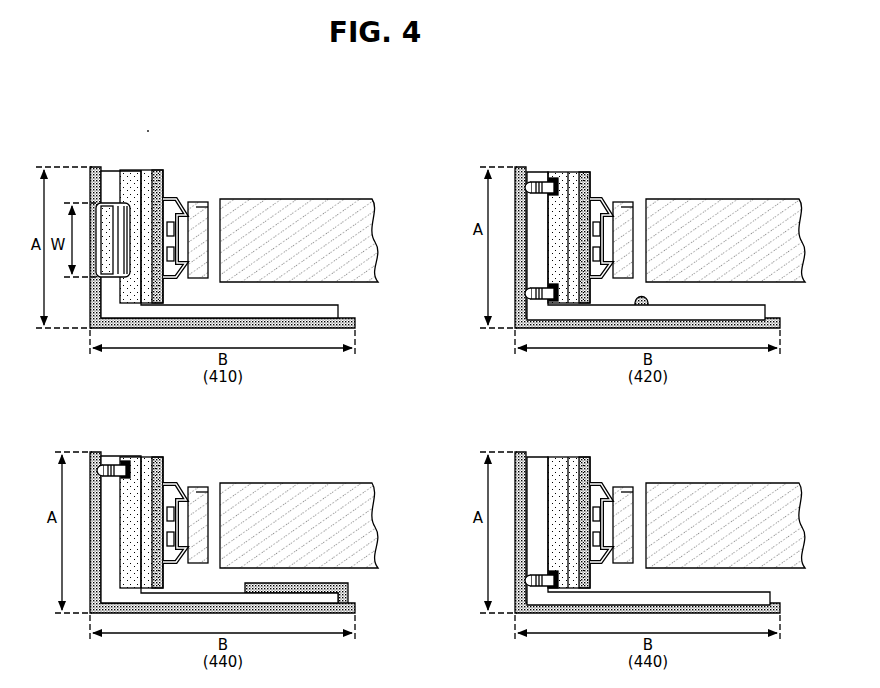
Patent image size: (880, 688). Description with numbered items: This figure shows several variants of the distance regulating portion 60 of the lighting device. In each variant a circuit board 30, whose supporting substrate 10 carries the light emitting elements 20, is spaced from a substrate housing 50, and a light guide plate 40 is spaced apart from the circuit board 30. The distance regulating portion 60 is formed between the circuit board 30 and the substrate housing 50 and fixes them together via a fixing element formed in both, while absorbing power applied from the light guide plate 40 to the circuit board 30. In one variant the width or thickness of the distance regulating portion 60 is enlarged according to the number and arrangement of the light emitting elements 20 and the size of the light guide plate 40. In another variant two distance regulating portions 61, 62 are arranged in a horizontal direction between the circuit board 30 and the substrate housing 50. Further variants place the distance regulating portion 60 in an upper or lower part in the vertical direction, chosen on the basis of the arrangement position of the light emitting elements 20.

The supporting substrate 10 is at (132, 172).
The light emitting elements 20 is at (198, 203).
The circuit board 30 is at (150, 130).
The light guide plate 40 is at (300, 199).
The substrate housing 50 is at (93, 167).
The distance regulating portion 60 is at (110, 202).
The first coupling member 61 is at (547, 169).
The second coupling member 62 is at (541, 273).